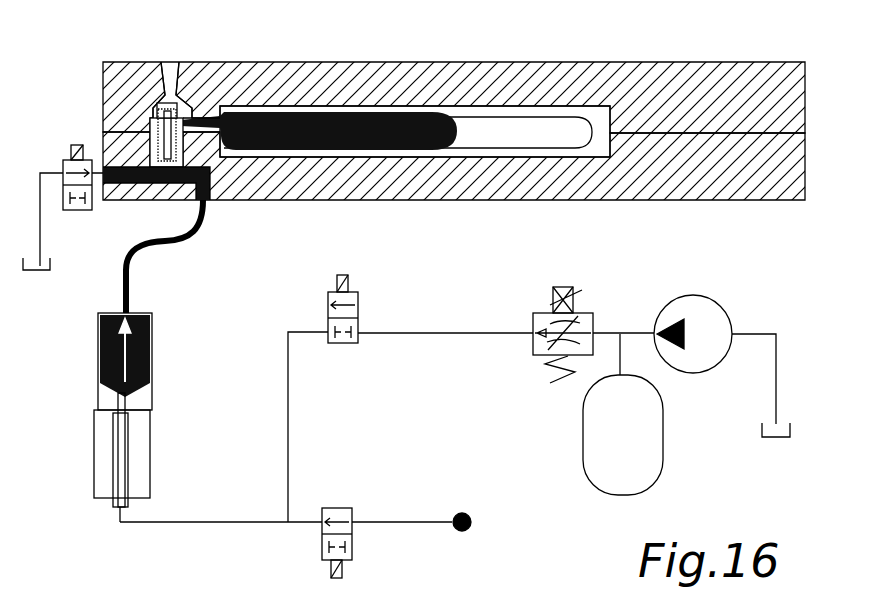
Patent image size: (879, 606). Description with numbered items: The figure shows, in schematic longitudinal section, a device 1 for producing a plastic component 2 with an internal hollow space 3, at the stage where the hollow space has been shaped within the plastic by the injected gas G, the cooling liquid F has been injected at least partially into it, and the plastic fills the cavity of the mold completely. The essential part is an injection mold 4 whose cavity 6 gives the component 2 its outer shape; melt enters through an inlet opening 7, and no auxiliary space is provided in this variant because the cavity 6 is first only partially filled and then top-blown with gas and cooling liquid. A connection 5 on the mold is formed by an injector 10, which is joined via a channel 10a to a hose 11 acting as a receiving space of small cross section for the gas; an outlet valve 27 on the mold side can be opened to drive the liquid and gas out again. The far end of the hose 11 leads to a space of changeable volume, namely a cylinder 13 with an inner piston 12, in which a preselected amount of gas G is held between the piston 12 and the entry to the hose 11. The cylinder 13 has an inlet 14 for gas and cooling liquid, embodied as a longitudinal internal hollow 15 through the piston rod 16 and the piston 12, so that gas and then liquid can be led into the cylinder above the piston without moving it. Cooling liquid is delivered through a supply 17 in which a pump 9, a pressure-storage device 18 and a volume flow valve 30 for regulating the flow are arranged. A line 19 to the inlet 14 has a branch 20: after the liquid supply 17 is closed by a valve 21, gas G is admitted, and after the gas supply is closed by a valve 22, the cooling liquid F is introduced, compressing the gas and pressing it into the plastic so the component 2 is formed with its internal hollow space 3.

The device 1 is at (66, 352).
The plastic component 2 is at (594, 142).
The internal hollow space 3 is at (503, 138).
The injection mold 4 is at (374, 183).
The connection 5 is at (207, 100).
The cavity 6 is at (233, 143).
The inlet opening 7 is at (165, 66).
The pump 9 is at (712, 305).
The injector 10 is at (142, 130).
The channel 10a is at (157, 174).
The hose 11 is at (175, 243).
The piston 12 is at (152, 398).
The cylinder 13 is at (150, 440).
The inlet 14 is at (116, 512).
The longitudinal internal hollow 15 is at (125, 460).
The piston rod 16 is at (130, 490).
The supply 17 is at (421, 336).
The pressure-storage device 18 is at (585, 440).
The line 19 is at (208, 523).
The branch 20 is at (286, 525).
The valve 21 is at (358, 310).
The valve 22 is at (352, 543).
The outlet valve 27 is at (73, 212).
The volume flow valve 30 is at (535, 346).
The cooling liquid F is at (327, 147).
The gas G is at (533, 137).